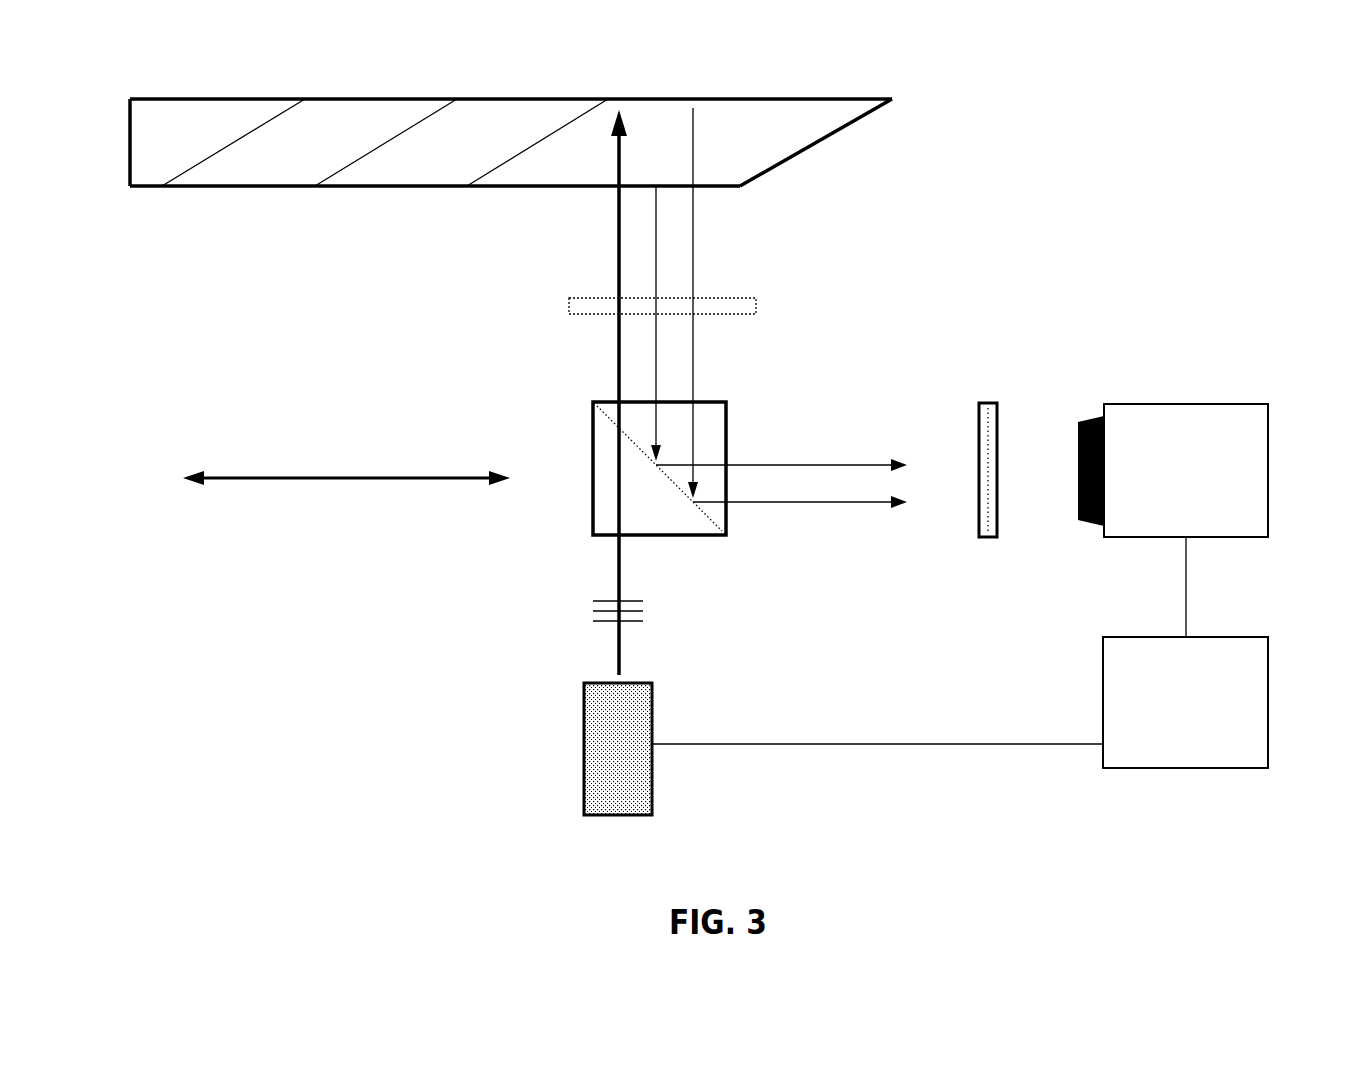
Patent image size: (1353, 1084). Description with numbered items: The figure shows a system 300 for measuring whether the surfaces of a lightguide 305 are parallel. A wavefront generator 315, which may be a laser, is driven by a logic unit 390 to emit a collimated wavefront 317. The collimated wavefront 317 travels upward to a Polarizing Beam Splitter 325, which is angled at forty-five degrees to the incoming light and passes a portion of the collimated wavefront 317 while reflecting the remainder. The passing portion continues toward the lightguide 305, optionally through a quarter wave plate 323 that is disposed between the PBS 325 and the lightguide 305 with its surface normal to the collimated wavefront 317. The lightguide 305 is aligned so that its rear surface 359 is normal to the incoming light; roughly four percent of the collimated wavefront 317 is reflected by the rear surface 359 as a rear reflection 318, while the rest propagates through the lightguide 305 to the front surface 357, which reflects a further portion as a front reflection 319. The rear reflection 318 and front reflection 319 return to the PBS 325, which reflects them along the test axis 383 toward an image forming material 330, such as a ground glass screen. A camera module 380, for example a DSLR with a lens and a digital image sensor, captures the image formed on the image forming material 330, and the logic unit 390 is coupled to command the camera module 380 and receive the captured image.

The system 300 is at (1273, 114).
The lightguide 305 is at (561, 141).
The wavefront generator 315 is at (652, 816).
The collimated wavefront 317 is at (645, 619).
The rear reflection 318 is at (660, 207).
The front reflection 319 is at (697, 258).
The quarter wave plate 323 is at (723, 315).
The Polarizing Beam Splitter 325 is at (592, 513).
The image forming material 330 is at (989, 398).
The front surface 357 is at (372, 98).
The rear surface 359 is at (333, 188).
The camera module 380 is at (1205, 508).
The test axis 383 is at (346, 466).
The logic unit 390 is at (1203, 726).